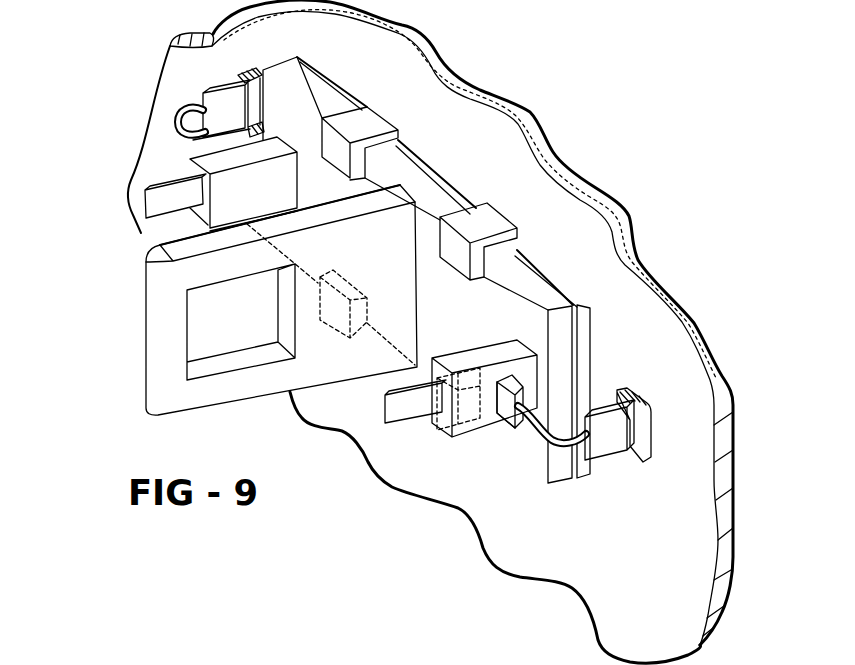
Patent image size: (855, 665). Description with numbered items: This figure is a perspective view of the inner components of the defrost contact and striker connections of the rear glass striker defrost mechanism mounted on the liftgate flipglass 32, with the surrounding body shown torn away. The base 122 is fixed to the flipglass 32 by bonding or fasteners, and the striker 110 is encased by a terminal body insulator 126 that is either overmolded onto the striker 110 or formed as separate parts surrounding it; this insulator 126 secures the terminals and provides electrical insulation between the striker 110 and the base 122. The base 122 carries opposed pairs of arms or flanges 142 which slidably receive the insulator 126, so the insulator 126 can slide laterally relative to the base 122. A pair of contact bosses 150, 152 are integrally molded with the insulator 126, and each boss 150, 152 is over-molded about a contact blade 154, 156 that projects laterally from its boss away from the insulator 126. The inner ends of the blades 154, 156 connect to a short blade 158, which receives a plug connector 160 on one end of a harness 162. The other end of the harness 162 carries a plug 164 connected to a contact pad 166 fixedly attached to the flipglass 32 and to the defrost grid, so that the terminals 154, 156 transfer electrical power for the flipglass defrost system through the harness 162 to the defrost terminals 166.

The liftgate flipglass 32 is at (563, 580).
The striker 110 is at (153, 345).
The base 122 is at (443, 167).
The terminal body insulator 126 is at (552, 288).
The arms or flanges 142 is at (385, 110).
The contact boss 150 is at (275, 150).
The contact boss 152 is at (445, 415).
The contact blade 154 is at (157, 202).
The contact blade 156 is at (407, 420).
The short blade 158 is at (500, 395).
The plug connector 160 is at (208, 139).
The harness 162 is at (180, 124).
The plug 164 is at (607, 450).
The contact pad 166 is at (233, 78).